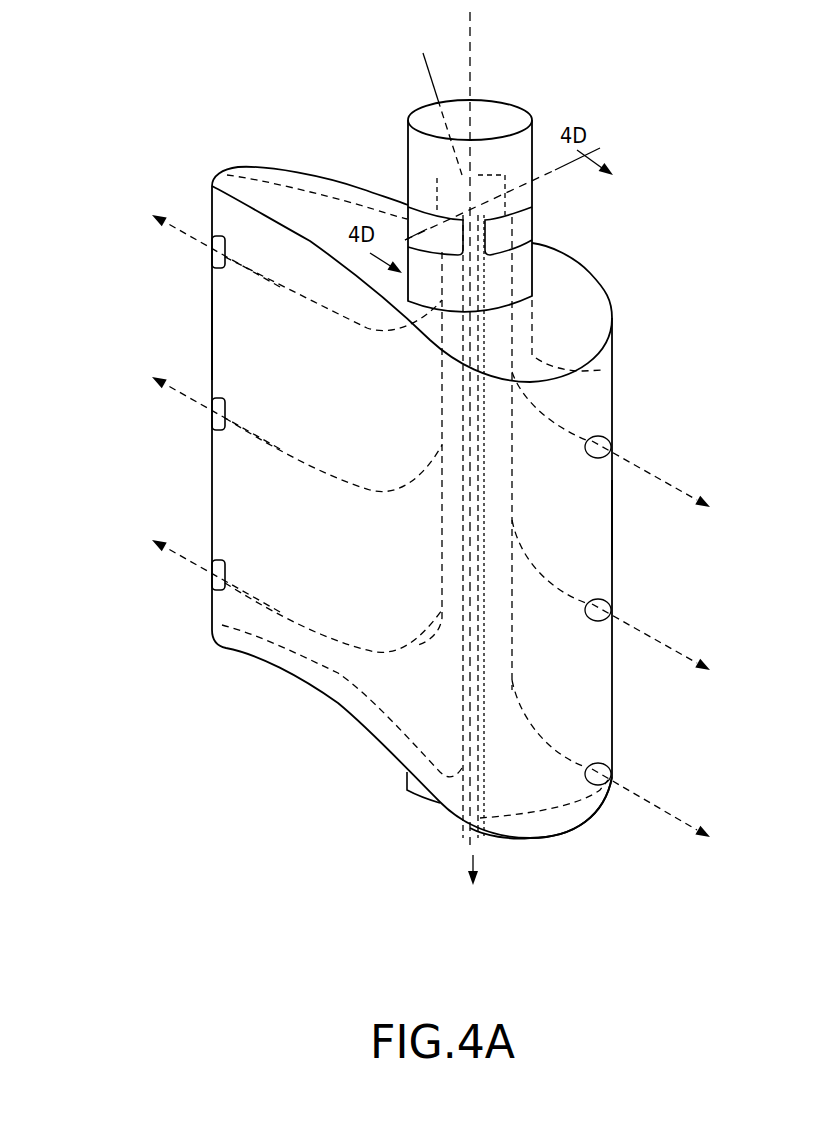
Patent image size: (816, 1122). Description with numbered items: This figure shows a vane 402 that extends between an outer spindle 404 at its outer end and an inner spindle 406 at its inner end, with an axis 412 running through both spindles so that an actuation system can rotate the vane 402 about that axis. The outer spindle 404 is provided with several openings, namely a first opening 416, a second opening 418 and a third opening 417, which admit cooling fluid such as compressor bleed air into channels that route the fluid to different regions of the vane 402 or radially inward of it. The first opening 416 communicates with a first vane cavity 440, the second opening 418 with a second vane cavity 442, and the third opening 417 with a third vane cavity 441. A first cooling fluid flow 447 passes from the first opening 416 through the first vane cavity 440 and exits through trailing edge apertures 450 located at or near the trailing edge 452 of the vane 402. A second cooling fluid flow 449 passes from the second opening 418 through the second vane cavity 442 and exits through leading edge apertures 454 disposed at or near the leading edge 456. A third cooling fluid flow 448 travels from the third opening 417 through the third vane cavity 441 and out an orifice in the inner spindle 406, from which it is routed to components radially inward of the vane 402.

The vane 402 is at (175, 92).
The outer spindle 404 is at (507, 120).
The inner spindle 406 is at (407, 783).
The axis 412 is at (470, 42).
The first opening 416 is at (408, 208).
The third opening 417 is at (458, 176).
The second opening 418 is at (533, 209).
The first vane cavity 440 is at (235, 630).
The third vane cavity 441 is at (478, 830).
The second vane cavity 442 is at (577, 803).
The first cooling fluid flow 447 is at (408, 209).
The third cooling fluid flow 448 is at (425, 70).
The second cooling fluid flow 449 is at (518, 220).
The trailing edge apertures 450 is at (205, 251).
The trailing edge 452 is at (212, 482).
The leading edge apertures 454 is at (609, 435).
The leading edge 456 is at (612, 573).